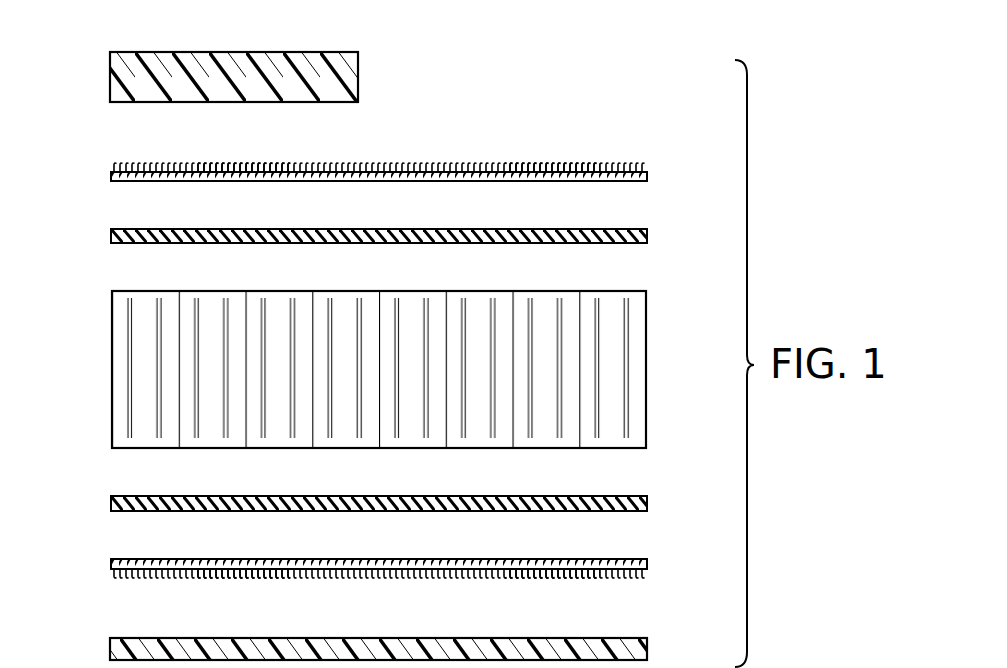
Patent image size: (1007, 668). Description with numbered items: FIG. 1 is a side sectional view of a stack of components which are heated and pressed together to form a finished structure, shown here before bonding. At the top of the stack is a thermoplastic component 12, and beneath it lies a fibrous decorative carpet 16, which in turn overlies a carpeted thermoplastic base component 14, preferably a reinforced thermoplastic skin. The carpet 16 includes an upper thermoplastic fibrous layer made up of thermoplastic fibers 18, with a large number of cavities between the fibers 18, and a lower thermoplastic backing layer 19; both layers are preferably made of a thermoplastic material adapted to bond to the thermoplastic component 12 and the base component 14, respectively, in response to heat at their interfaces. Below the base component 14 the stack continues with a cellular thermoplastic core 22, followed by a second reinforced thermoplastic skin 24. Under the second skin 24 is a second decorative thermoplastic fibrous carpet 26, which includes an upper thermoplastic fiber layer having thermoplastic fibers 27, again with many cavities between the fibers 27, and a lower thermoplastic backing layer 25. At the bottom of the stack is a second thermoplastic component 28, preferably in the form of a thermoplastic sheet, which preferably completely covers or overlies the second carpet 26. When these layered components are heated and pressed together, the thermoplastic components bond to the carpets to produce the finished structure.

The thermoplastic component 12 is at (361, 76).
The carpeted thermoplastic base component 14 is at (652, 236).
The fibrous decorative carpet 16 is at (652, 176).
The thermoplastic fibers 18 is at (286, 166).
The lower thermoplastic backing layer 19 is at (111, 176).
The cellular thermoplastic core 22 is at (647, 370).
The second reinforced thermoplastic skin 24 is at (603, 497).
The lower thermoplastic backing layer 25 is at (111, 563).
The second decorative thermoplastic fibrous carpet 26 is at (647, 565).
The thermoplastic fibers 27 is at (285, 577).
The second thermoplastic component 28 is at (647, 647).